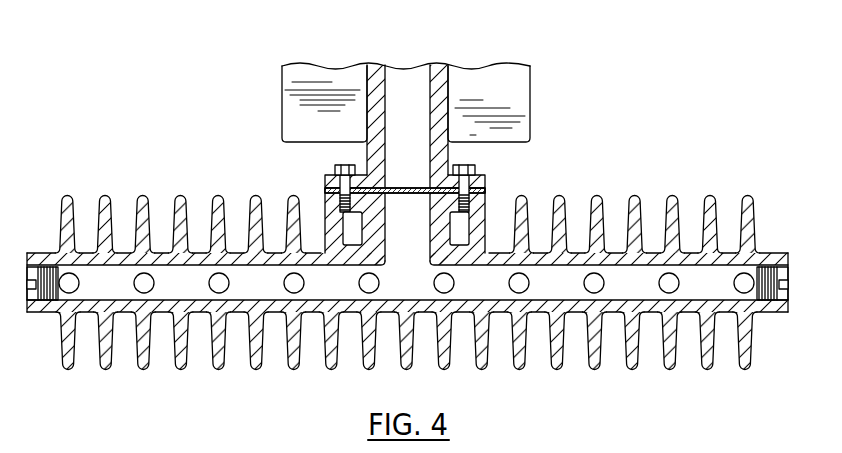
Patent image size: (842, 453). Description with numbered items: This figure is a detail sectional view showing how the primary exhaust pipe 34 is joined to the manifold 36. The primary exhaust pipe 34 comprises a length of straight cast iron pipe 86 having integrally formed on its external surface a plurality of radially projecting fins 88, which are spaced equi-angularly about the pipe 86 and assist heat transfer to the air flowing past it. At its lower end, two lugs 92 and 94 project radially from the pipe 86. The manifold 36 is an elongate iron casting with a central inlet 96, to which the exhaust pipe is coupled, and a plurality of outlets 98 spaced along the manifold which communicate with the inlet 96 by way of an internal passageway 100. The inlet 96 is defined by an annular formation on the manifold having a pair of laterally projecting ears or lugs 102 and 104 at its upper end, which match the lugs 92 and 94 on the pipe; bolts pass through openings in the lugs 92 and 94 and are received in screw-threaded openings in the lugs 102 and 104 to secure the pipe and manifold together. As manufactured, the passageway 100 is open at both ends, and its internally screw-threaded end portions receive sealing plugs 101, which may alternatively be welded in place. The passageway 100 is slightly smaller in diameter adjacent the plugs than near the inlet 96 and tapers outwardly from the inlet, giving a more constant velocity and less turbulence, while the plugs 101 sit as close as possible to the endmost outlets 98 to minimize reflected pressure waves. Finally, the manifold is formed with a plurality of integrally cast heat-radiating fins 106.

The primary exhaust pipe 34 is at (502, 48).
The manifold 36 is at (639, 178).
The cast iron pipe 86 is at (438, 77).
The radially projecting fins 88 is at (515, 88).
The lug 92 is at (333, 172).
The lug 94 is at (485, 178).
The central inlet 96 is at (407, 247).
The outlets 98 is at (221, 290).
The internal passageway 100 is at (537, 295).
The sealing plugs 101 is at (40, 267).
The lug 102 is at (322, 203).
The lug 104 is at (480, 205).
The heat-radiating fins 106 is at (213, 216).